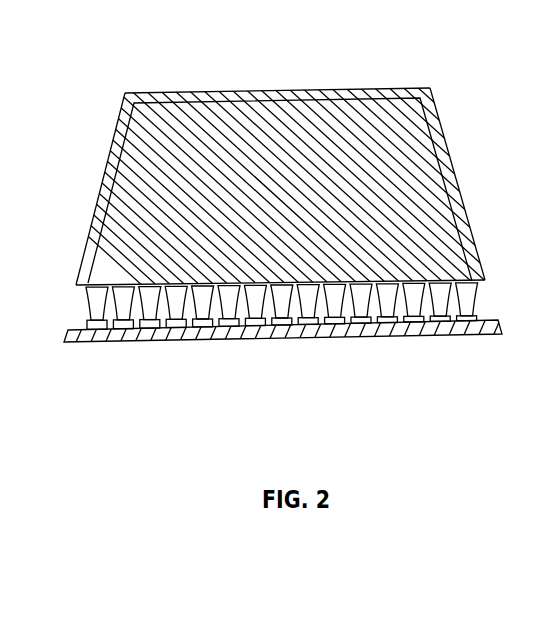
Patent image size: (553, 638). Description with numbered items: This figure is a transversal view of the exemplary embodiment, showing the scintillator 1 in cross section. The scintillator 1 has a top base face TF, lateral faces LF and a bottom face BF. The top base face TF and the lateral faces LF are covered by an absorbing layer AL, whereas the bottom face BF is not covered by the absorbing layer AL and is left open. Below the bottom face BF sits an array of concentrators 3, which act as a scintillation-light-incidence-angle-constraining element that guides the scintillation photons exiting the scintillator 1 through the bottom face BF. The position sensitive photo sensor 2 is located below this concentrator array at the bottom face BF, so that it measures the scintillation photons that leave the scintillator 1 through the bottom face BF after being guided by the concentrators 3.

The scintillator 1 is at (460, 75).
The position sensitive photo sensor 2 is at (143, 344).
The concentrators 3 is at (97, 312).
The top base face TF is at (384, 92).
The bottom face BF is at (363, 292).
The lateral faces LF is at (102, 224).
The absorbing layer AL is at (203, 99).